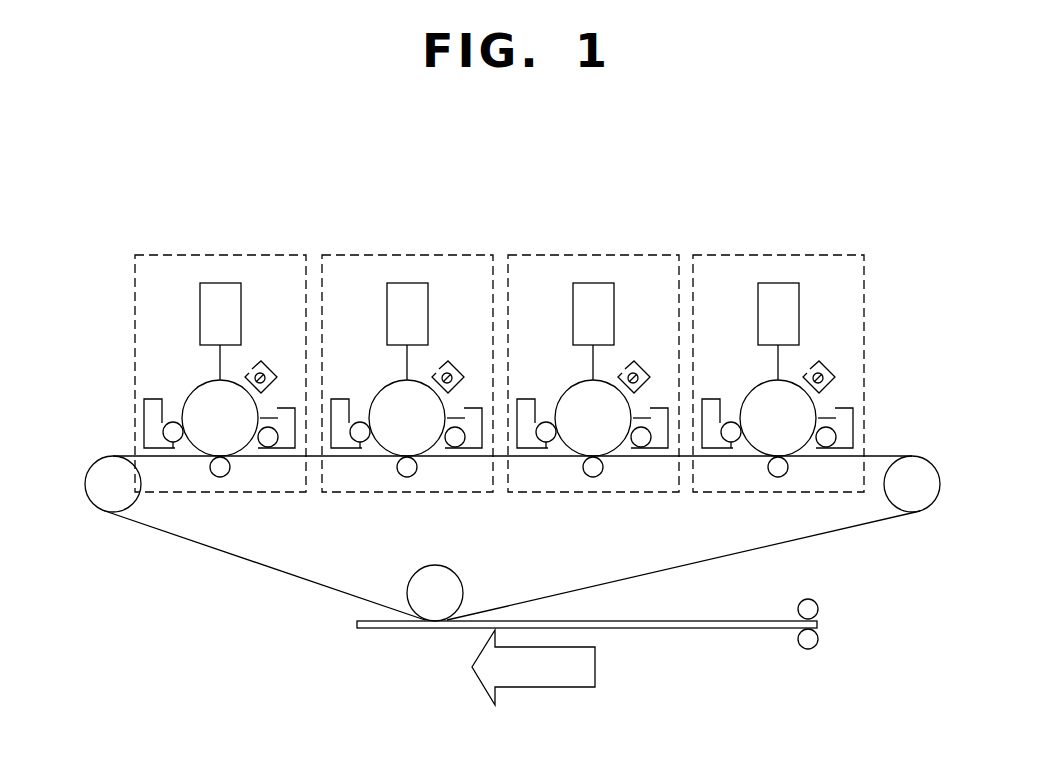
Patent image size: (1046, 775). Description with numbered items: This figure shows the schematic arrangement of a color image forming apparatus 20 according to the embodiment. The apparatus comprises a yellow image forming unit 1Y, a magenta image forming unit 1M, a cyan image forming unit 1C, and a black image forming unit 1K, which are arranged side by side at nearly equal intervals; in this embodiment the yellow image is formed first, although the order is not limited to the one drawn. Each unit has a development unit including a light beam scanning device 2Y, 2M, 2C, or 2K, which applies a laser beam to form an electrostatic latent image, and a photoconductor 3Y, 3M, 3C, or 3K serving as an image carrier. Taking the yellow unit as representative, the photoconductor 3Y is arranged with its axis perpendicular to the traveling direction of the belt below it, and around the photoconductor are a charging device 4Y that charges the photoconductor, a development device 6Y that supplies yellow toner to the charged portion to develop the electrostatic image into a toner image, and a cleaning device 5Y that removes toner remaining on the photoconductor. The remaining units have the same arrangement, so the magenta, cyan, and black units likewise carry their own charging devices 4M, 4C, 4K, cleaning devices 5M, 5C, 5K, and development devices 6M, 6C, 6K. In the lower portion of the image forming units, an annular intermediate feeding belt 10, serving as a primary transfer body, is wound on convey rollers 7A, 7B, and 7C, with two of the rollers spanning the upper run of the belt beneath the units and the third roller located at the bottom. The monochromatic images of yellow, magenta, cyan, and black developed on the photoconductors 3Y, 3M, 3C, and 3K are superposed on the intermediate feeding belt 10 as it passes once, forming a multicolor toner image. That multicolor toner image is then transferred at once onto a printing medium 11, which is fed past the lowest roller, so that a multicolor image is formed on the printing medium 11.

The yellow image forming unit 1Y is at (216, 255).
The magenta image forming unit 1M is at (407, 347).
The cyan image forming unit 1C is at (593, 347).
The black image forming unit 1K is at (778, 347).
The light beam scanning device 2Y is at (200, 302).
The light beam scanning device 2M is at (377, 314).
The light beam scanning device 2C is at (564, 314).
The light beam scanning device 2K is at (749, 314).
The photoconductor 3Y is at (203, 381).
The photoconductor 3M is at (404, 411).
The photoconductor 3C is at (591, 411).
The photoconductor 3K is at (776, 411).
The charging device 4Y is at (254, 366).
The charging device 4M is at (448, 353).
The charging device 4C is at (635, 353).
The charging device 4K is at (820, 353).
The cleaning device 5Y is at (290, 408).
The cleaning device 5M is at (467, 395).
The cleaning device 5C is at (652, 395).
The cleaning device 5K is at (837, 395).
The development device 6Y is at (162, 399).
The development device 6M is at (348, 388).
The development device 6C is at (535, 388).
The development device 6K is at (720, 388).
The convey roller 7A is at (137, 502).
The convey roller 7B is at (912, 455).
The convey roller 7C is at (457, 575).
The intermediate feeding belt 10 is at (810, 533).
The printing medium 11 is at (697, 630).
The color image forming apparatus 20 is at (512, 510).